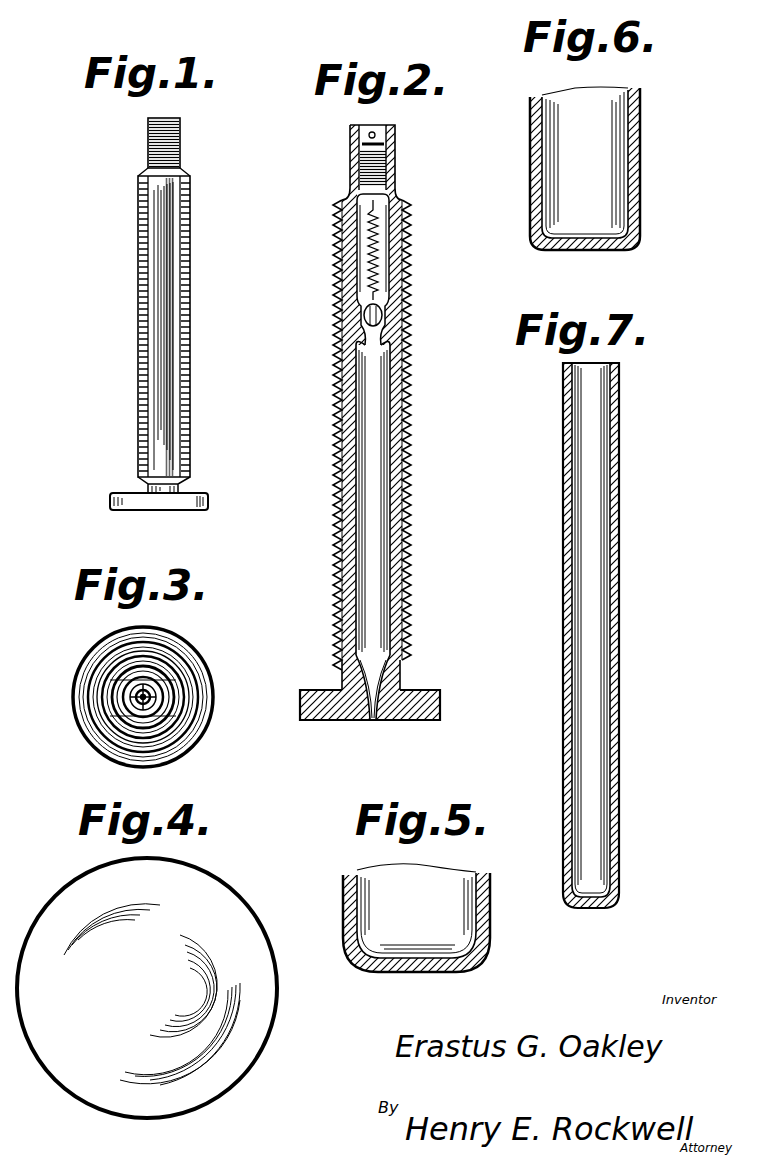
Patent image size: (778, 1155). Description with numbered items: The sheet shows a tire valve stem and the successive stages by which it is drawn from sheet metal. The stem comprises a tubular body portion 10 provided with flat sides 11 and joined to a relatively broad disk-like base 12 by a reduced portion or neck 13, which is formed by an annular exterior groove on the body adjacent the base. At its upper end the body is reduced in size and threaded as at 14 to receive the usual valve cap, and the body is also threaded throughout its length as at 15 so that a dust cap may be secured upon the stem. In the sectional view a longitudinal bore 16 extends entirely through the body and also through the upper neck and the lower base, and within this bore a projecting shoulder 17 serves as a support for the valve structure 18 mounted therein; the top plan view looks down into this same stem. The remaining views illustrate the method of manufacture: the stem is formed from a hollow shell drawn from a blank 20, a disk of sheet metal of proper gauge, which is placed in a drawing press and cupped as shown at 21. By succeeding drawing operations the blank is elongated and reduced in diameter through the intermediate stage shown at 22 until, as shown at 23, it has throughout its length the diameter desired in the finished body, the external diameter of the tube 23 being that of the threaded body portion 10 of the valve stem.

In FIG. 1, the tubular body portion 10 is at (207, 317).
In FIG. 1, the flat sides 11 is at (176, 232).
In FIG. 3, the flat sides 11 is at (146, 660).
In FIG. 1, the disk-like base 12 is at (190, 512).
In FIG. 2, the disk-like base 12 is at (434, 718).
In FIG. 3, the disk-like base 12 is at (196, 668).
In FIG. 1, the neck 13 is at (180, 488).
In FIG. 2, the neck 13 is at (398, 688).
In FIG. 1, the threaded upper end 14 is at (181, 148).
In FIG. 2, the threaded upper end 14 is at (386, 168).
In FIG. 3, the threaded upper end 14 is at (170, 702).
In FIG. 1, the threads 15 is at (183, 353).
In FIG. 2, the threads 15 is at (400, 366).
In FIG. 3, the threads 15 is at (88, 733).
In FIG. 2, the longitudinal bore 16 is at (400, 412).
In FIG. 2, the projecting shoulder 17 is at (388, 322).
In FIG. 2, the valve structure 18 is at (390, 254).
In FIG. 3, the valve structure 18 is at (202, 726).
In FIG. 4, the blank 20 is at (232, 900).
In FIG. 5, the cupped blank 21 is at (490, 908).
In FIG. 6, the intermediate drawn shell 22 is at (641, 167).
In FIG. 7, the tube 23 is at (620, 520).